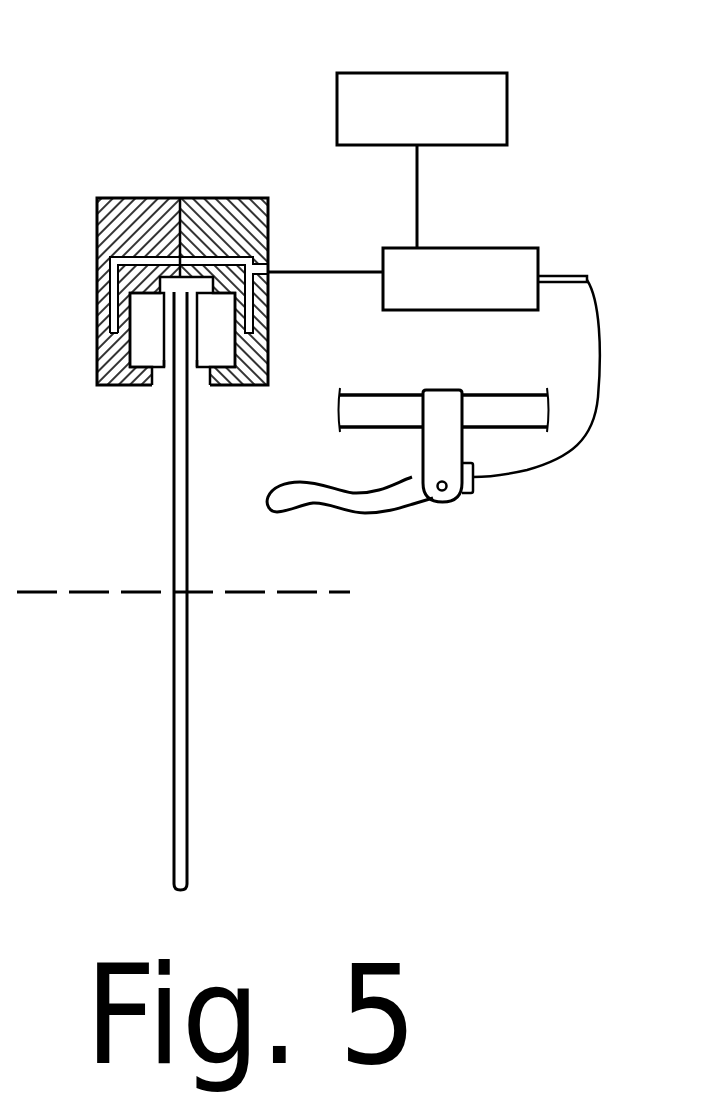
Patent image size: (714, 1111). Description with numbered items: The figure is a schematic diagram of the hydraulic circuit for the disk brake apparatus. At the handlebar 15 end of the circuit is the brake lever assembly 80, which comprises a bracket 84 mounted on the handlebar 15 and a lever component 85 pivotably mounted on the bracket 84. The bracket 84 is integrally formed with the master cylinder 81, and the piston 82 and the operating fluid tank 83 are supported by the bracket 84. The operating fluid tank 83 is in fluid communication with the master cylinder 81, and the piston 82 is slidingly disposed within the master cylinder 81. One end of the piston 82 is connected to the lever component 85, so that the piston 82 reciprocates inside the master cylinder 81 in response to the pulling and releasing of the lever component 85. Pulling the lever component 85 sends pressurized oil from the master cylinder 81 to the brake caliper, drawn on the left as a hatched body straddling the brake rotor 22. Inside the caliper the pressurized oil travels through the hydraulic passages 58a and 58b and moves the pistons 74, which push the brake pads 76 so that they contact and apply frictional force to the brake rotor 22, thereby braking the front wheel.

The operating fluid tank 83 is at (452, 72).
The master cylinder 81 is at (477, 248).
The piston 82 is at (552, 272).
The hydraulic passage 58a is at (97, 347).
The hydraulic passage 58b is at (256, 318).
The pistons 74 is at (138, 350).
The brake pads 76 is at (160, 368).
The brake rotor 22 is at (188, 669).
The handlebar 15 is at (383, 394).
The bracket 84 is at (423, 462).
The lever component 85 is at (347, 512).
The brake lever assembly 80 is at (441, 513).